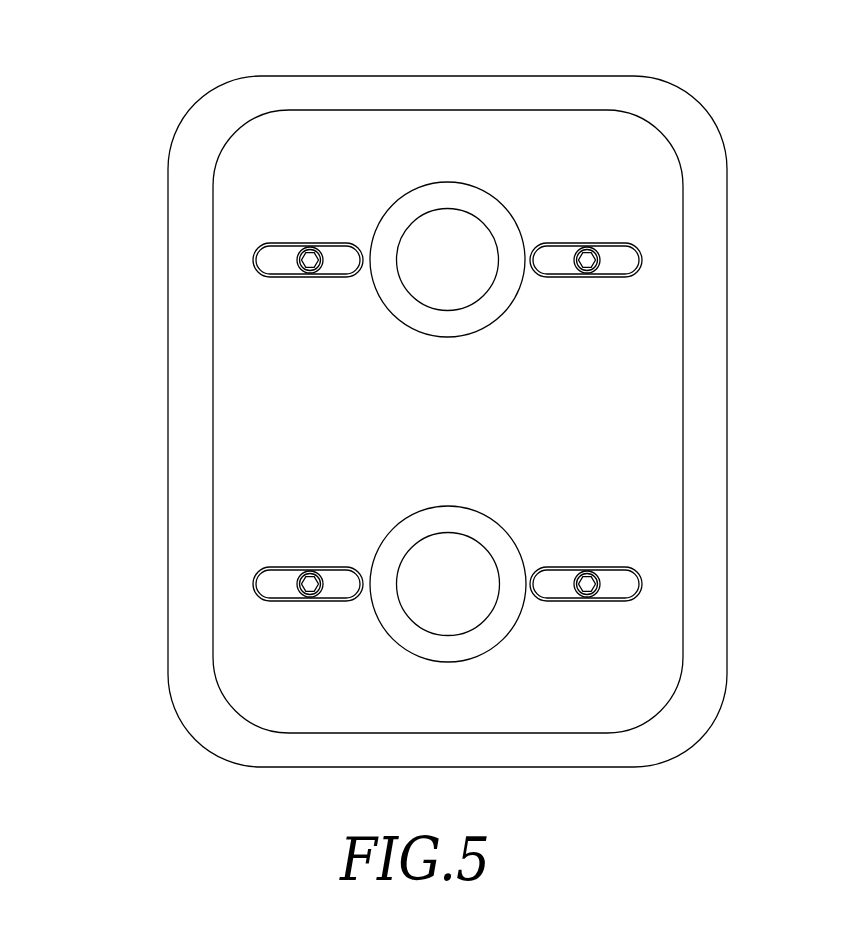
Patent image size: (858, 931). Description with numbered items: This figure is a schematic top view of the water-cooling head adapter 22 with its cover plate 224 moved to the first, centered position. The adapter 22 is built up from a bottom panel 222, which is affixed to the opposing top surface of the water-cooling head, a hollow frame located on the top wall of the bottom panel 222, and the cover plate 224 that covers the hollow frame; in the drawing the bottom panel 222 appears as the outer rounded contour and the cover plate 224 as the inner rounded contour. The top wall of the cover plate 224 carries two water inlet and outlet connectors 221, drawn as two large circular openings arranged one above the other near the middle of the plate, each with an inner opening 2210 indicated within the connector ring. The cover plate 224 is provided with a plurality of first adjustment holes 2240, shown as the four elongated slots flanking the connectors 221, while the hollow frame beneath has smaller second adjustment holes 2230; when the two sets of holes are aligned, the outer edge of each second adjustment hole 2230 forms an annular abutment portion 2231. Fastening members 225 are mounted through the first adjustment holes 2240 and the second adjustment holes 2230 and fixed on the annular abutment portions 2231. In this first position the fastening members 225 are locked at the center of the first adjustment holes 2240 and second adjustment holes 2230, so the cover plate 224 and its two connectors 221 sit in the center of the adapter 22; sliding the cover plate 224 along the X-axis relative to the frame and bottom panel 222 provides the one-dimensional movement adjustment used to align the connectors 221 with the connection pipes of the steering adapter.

The water-cooling head adapter 22 is at (747, 415).
The water inlet and outlet connectors 221 is at (446, 343).
The inner hole of circular through hole 2210 is at (435, 245).
The bottom panel 222 is at (193, 640).
The cover plate 224 is at (242, 532).
The fastening members 225 is at (296, 258).
The second adjustment holes 2230 is at (679, 146).
The annular abutment portion 2231 is at (612, 245).
The first adjustment holes 2240 is at (630, 248).